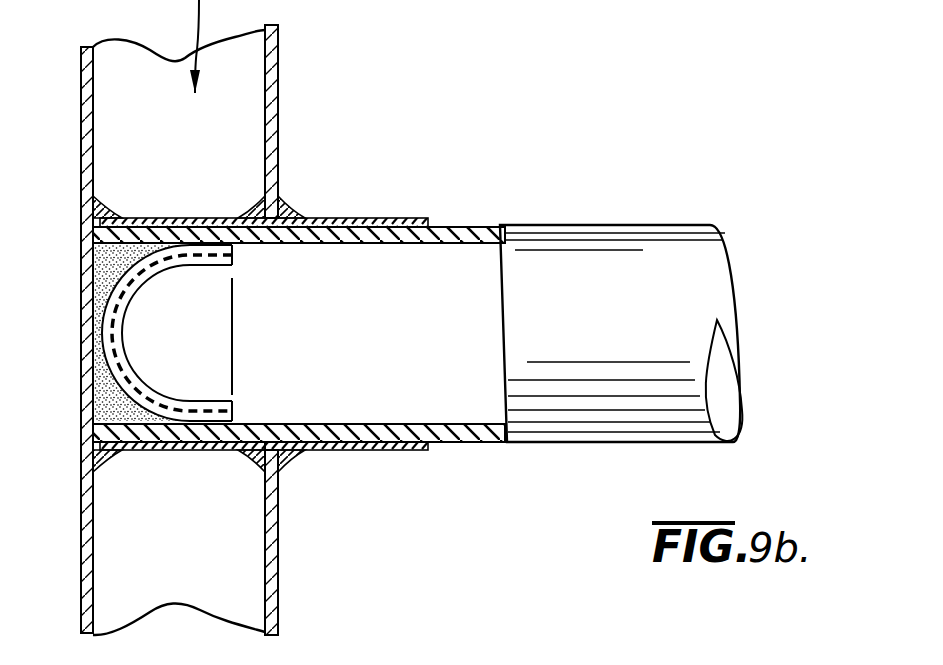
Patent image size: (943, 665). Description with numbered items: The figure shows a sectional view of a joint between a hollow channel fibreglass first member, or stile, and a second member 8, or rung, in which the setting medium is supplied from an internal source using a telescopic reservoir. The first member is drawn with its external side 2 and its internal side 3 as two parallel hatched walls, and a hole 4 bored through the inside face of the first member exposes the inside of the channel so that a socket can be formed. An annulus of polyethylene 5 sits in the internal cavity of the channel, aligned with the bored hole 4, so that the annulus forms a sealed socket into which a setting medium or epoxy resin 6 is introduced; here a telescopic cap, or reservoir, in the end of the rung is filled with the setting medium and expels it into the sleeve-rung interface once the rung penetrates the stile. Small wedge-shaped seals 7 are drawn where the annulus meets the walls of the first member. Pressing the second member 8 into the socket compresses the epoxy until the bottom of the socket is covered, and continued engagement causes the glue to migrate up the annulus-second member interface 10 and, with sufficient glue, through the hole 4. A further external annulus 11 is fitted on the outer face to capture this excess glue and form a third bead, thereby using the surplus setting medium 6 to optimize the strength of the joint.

The external side 2 is at (82, 80).
The internal side 3 is at (280, 113).
The hole 4 is at (277, 424).
The annulus of polyethylene 5 is at (178, 218).
The setting medium or epoxy resin 6 is at (132, 282).
The wedge seal 7 is at (115, 210).
The second member 8 is at (603, 365).
The annulus-second member interface 10 is at (180, 453).
The external annulus 11 is at (363, 452).